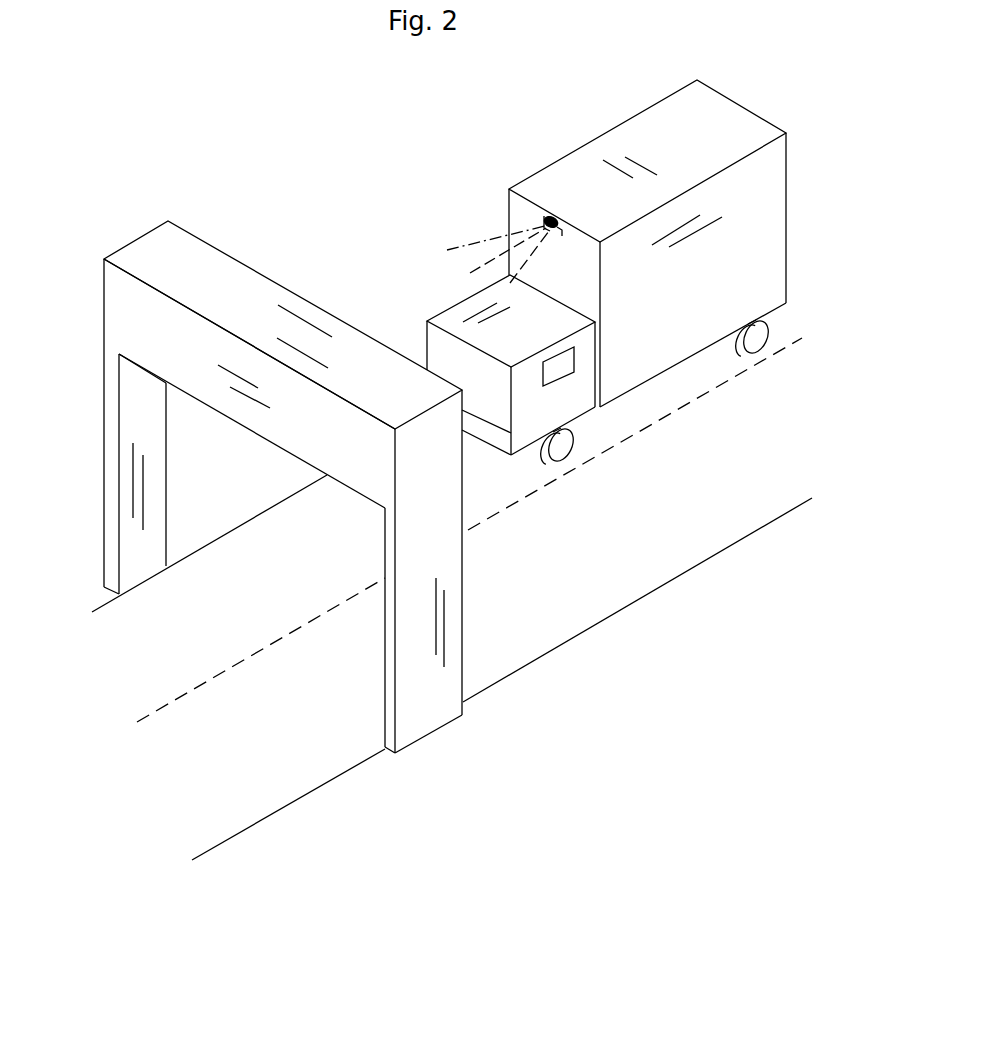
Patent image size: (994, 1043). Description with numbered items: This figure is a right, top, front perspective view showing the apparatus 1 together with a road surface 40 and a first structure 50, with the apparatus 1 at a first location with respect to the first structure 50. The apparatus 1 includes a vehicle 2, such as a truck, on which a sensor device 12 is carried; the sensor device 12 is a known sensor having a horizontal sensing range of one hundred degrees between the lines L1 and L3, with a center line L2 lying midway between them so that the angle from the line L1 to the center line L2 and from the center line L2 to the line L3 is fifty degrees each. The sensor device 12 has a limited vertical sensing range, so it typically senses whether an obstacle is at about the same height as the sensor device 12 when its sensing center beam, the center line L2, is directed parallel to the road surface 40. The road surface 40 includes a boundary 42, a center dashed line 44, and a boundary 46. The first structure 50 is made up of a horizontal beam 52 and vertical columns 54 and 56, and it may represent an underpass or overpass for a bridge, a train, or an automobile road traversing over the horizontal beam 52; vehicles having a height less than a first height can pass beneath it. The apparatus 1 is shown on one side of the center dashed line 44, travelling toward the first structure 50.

The apparatus 1 is at (621, 109).
The vehicle 2 is at (573, 168).
The sensor device 12 is at (551, 214).
The road surface 40 is at (580, 618).
The boundary 42 is at (259, 515).
The center dashed line 44 is at (334, 605).
The boundary 46 is at (324, 777).
The first structure 50 is at (207, 258).
The horizontal beam 52 is at (268, 295).
The vertical column 54 is at (104, 515).
The vertical column 56 is at (432, 703).
The line L1 is at (483, 235).
The center line L2 is at (473, 267).
The line L3 is at (523, 268).